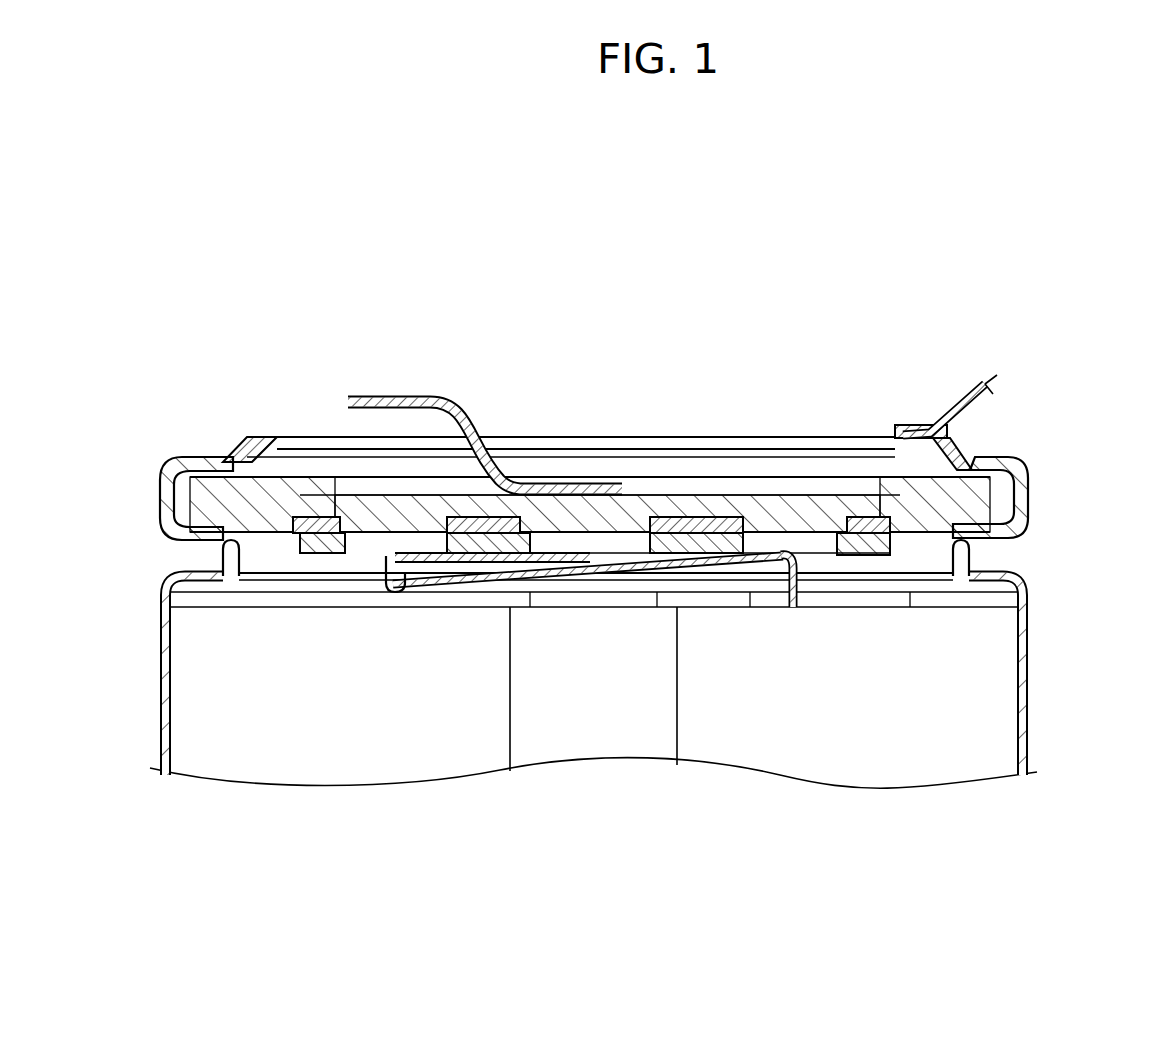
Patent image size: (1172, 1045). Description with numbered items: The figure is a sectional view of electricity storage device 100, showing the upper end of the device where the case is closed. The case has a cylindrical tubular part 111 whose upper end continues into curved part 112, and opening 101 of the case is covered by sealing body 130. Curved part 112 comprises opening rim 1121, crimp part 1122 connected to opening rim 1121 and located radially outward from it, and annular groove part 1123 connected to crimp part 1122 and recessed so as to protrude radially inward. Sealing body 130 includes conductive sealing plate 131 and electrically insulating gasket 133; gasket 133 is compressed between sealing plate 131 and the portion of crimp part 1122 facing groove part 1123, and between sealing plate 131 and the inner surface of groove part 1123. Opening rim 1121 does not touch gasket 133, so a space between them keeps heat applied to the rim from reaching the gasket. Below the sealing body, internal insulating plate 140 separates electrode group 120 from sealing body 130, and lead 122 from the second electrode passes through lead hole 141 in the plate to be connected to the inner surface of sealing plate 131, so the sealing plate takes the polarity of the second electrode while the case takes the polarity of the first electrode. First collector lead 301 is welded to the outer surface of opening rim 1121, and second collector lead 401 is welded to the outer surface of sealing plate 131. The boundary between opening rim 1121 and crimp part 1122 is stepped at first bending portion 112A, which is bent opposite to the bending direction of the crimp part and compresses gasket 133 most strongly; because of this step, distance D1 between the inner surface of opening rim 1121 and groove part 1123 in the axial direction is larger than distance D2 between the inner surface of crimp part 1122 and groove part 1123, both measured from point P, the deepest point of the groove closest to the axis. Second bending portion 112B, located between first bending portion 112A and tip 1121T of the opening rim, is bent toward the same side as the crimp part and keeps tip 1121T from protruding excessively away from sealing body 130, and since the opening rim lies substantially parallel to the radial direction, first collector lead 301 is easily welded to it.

The electricity storage device 100 is at (1000, 240).
The opening 101 is at (834, 412).
The tubular part 111 is at (1023, 683).
The curved part 112 is at (1098, 410).
The opening rim 1121 is at (267, 437).
The tip of opening rim 1121T is at (303, 437).
The crimp part 1122 is at (190, 450).
The groove part 1123 is at (1032, 543).
The first bending portion 112A is at (223, 450).
The second bending portion 112B is at (250, 430).
The electrode group 120 is at (740, 733).
The lead 122 is at (367, 593).
The sealing body 130 is at (745, 379).
The sealing plate 131 is at (700, 507).
The gasket 133 is at (935, 455).
The internal insulating plate 140 is at (993, 600).
The lead hole 141 is at (860, 603).
The first collector lead 301 is at (977, 381).
The second collector lead 401 is at (413, 403).
The point P is at (233, 572).
The distance D1 is at (230, 557).
The distance D2 is at (190, 473).